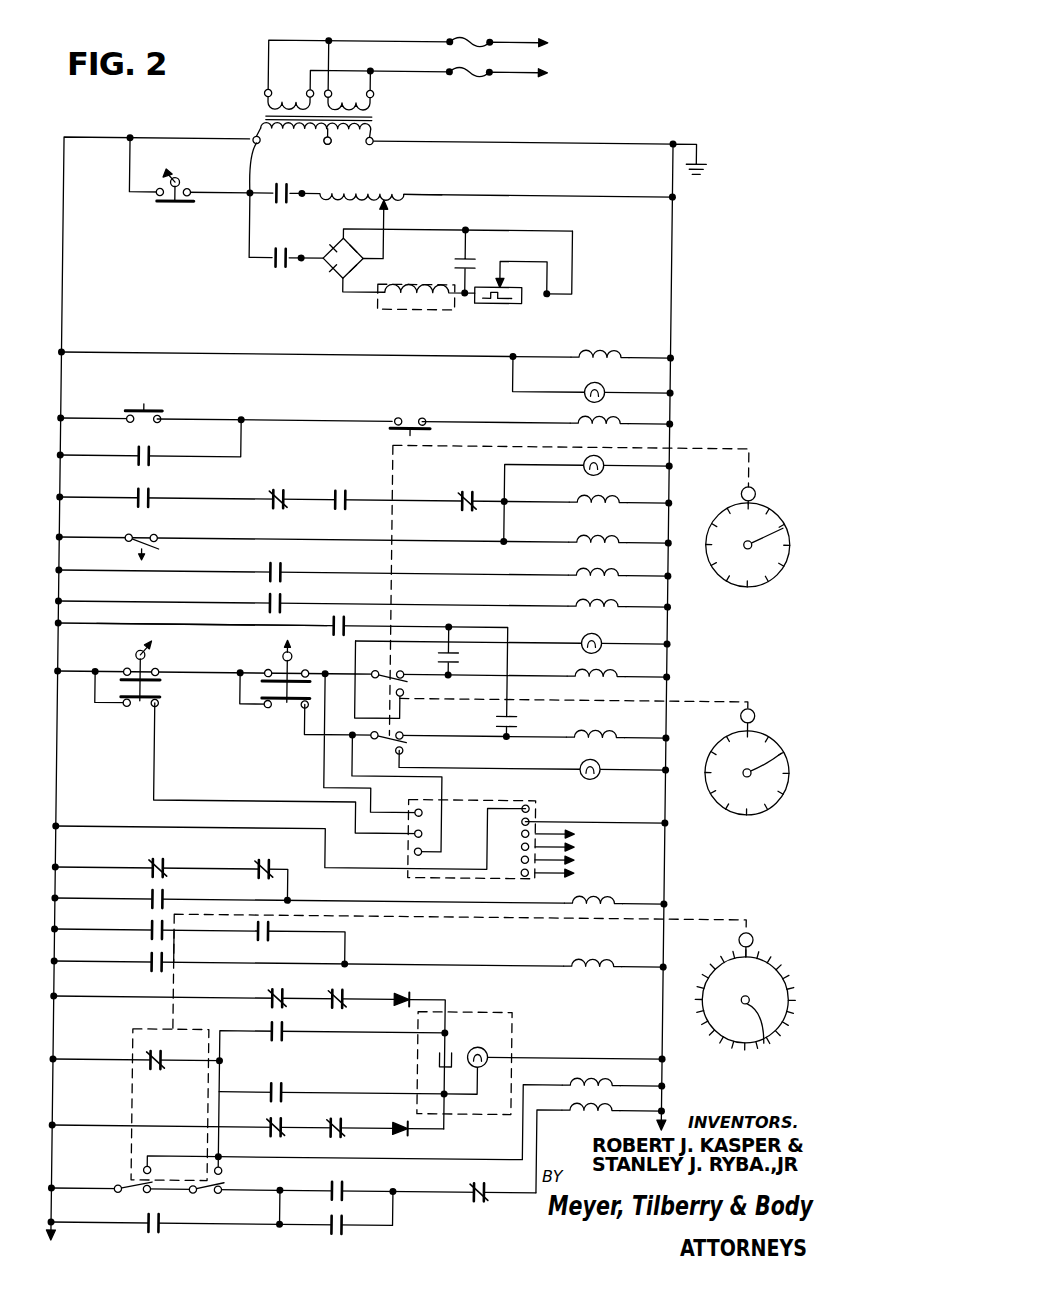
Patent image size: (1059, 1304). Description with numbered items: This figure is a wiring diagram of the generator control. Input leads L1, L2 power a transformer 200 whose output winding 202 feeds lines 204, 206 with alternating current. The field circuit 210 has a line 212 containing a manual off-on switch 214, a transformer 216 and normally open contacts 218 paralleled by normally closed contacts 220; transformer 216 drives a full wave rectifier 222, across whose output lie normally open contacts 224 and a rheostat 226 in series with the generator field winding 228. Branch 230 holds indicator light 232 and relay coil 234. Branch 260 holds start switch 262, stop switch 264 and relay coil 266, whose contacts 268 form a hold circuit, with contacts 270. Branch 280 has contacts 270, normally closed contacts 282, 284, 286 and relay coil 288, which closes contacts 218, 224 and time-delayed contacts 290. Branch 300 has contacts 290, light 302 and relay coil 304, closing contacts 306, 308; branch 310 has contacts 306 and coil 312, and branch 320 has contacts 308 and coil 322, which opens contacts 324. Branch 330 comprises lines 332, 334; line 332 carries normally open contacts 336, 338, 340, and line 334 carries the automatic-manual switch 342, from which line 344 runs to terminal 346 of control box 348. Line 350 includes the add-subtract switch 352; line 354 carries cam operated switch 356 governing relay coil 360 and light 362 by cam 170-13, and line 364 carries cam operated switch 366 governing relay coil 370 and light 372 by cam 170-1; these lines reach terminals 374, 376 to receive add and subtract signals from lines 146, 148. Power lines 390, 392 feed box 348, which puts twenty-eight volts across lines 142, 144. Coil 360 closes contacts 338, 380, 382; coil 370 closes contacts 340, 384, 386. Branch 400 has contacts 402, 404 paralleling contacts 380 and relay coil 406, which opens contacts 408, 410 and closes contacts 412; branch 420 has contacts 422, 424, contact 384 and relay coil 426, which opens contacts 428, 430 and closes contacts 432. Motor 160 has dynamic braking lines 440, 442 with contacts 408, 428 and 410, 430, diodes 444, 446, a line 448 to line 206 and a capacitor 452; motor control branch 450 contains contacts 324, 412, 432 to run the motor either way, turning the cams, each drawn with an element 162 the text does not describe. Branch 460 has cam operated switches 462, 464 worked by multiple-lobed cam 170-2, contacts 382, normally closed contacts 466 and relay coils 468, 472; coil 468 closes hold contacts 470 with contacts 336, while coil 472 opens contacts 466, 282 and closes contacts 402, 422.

The line 142 is at (553, 826).
The line 144 is at (562, 841).
The add signal line 146 is at (566, 854).
The subtract signal line 148 is at (566, 867).
The motor 160 is at (482, 1044).
The timer dial pointer 162 is at (787, 520).
The cam 170-13 is at (758, 491).
The cam 170-1 is at (768, 732).
The multiple-lobed cam 170-2 is at (760, 942).
The transformer 200 is at (387, 113).
The output winding 202 is at (327, 142).
The line 204 is at (62, 232).
The line 206 is at (672, 230).
The field circuit 210 is at (424, 192).
The line 212 is at (540, 190).
The switch 214 is at (173, 200).
The transformer 216 is at (398, 189).
The normally open contacts 218 is at (268, 186).
The normally closed contacts 220 is at (268, 262).
The full wave rectifier 222 is at (336, 280).
The normally open contacts 224 is at (474, 256).
The rheostat 226 is at (522, 299).
The field winding 228 is at (426, 299).
The branch 230 is at (207, 327).
The indicator light 232 is at (586, 388).
The relay coil 234 is at (620, 350).
The branch 260 is at (223, 417).
The start switch 262 is at (131, 404).
The stop switch 264 is at (409, 412).
The relay coil 266 is at (636, 416).
The normally open contacts 268 is at (136, 450).
The normally open contacts 270 is at (153, 492).
The branch 280 is at (62, 496).
The normally closed contacts 282 is at (272, 489).
The normally closed contacts 284 is at (336, 489).
The normally closed contacts 286 is at (465, 492).
The relay coil 288 is at (573, 495).
The normally open contacts 290 is at (165, 534).
The branch 300 is at (62, 537).
The indicator light 302 is at (606, 457).
The relay coil 304 is at (573, 536).
The normally open contacts 306 is at (288, 566).
The normally open contacts 308 is at (270, 601).
The branch 310 is at (62, 570).
The relay coil 312 is at (573, 569).
The branch 320 is at (62, 601).
The relay coil 322 is at (573, 600).
The normally closed contacts 324 is at (138, 1056).
The branch 330 is at (62, 623).
The line 332 is at (182, 623).
The line 334 is at (62, 671).
The normally open contacts 336 is at (362, 622).
The normally open contacts 338 is at (456, 650).
The normally open contacts 340 is at (516, 712).
The manually actuated switch 342 is at (135, 706).
The line 344 is at (238, 800).
The terminal 346 is at (429, 830).
The control box 348 is at (513, 798).
The line 350 is at (193, 673).
The add or subtract switch 352 is at (274, 706).
The line 354 is at (361, 671).
The cam operated switch 356 is at (411, 680).
The relay coil 360 is at (631, 670).
The light 362 is at (586, 636).
The line 364 is at (325, 746).
The cam operated switch 366 is at (411, 741).
The relay coil 370 is at (631, 731).
The light 372 is at (606, 765).
The terminal 374 is at (438, 799).
The terminal 376 is at (429, 849).
The normally open contacts 380 is at (168, 892).
The normally open contacts 382 is at (350, 1185).
The normally open contacts 384 is at (151, 960).
The normally open contacts 386 is at (350, 1227).
The power line 390 is at (328, 837).
The power line 392 is at (582, 815).
The branch 400 is at (62, 867).
The normally open contacts 402 is at (182, 855).
The normally open contacts 404 is at (292, 872).
The relay coil 406 is at (630, 897).
The normally closed contacts 408 is at (352, 991).
The normally closed contacts 410 is at (350, 1118).
The normally open contacts 412 is at (274, 1027).
The branch 420 is at (62, 929).
The normally open contacts 422 is at (151, 925).
The normally open contacts 424 is at (280, 928).
The relay coil 426 is at (569, 949).
The normally closed contacts 428 is at (274, 992).
The normally closed contacts 430 is at (274, 1124).
The normally open contacts 432 is at (290, 1090).
The line 440 is at (62, 996).
The line 442 is at (84, 1123).
The diode 444 is at (418, 991).
The diode 446 is at (413, 1128).
The line 448 is at (558, 1052).
The motor control branch 450 is at (62, 1059).
The capacitor 452 is at (443, 1056).
The branch 460 is at (84, 1187).
The cam operated switch 462 is at (129, 1181).
The cam operated switch 464 is at (203, 1181).
The normally closed contacts 466 is at (476, 1196).
The relay coil 468 is at (641, 1106).
The normally open contacts 470 is at (172, 1227).
The relay coil 472 is at (599, 1079).
The input lead L1 is at (523, 40).
The input lead L2 is at (523, 68).